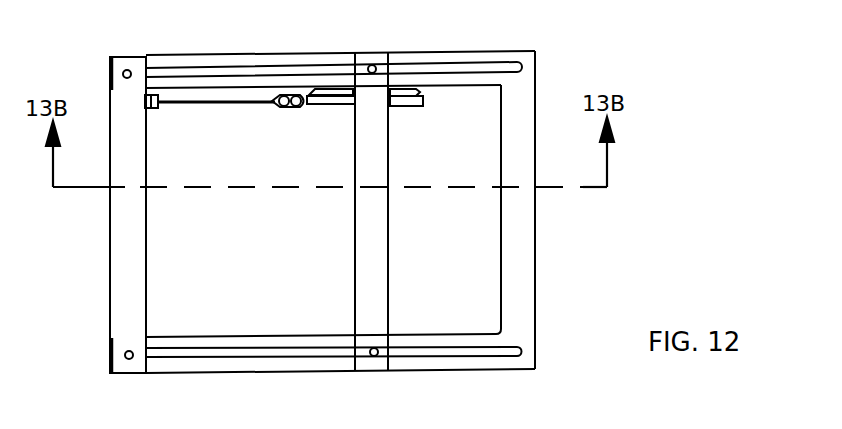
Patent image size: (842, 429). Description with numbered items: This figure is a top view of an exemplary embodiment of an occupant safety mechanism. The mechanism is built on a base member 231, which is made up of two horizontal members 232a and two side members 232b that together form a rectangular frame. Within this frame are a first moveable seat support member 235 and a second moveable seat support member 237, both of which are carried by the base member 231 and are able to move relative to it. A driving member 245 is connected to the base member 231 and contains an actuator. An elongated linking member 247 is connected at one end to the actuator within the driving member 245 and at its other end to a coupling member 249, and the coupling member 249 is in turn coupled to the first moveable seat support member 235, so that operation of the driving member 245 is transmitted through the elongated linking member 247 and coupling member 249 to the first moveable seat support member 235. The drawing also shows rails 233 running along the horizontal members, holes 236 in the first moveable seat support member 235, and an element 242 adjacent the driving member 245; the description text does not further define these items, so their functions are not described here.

The base member 231 is at (503, 312).
The horizontal member 232a is at (527, 287).
The side member 232b is at (434, 51).
The slide rail 233 is at (247, 69).
The first moveable seat support member 235 is at (123, 261).
The mounting hole 236 is at (126, 69).
The second moveable seat support member 237 is at (383, 274).
The latch member 242 is at (420, 90).
The driving member 245 is at (404, 100).
The elongated linking member 247 is at (193, 103).
The coupling member 249 is at (153, 109).